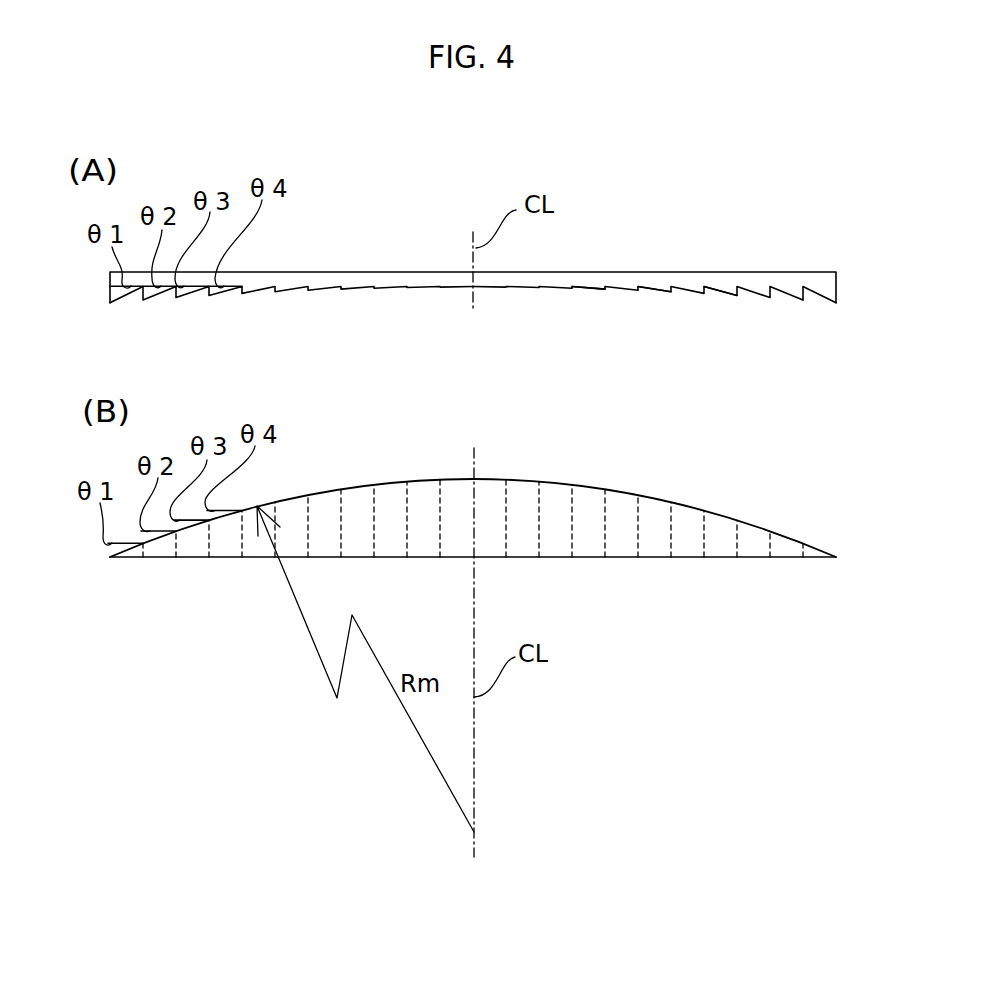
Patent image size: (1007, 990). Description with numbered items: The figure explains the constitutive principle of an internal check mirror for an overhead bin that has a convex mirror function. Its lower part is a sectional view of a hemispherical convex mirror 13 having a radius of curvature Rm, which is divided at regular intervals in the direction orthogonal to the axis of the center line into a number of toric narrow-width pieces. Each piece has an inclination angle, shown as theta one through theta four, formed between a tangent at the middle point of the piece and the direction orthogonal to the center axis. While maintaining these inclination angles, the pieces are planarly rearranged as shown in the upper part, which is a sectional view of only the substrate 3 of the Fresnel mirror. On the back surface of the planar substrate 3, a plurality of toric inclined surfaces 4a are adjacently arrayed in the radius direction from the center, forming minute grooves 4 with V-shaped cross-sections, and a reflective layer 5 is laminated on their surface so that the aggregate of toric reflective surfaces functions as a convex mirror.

The substrate 3 is at (625, 275).
The minute grooves 4 is at (683, 290).
The toric inclined surfaces 4a is at (587, 294).
The reflective layer 5 is at (289, 292).
The convex mirror 13 is at (703, 488).